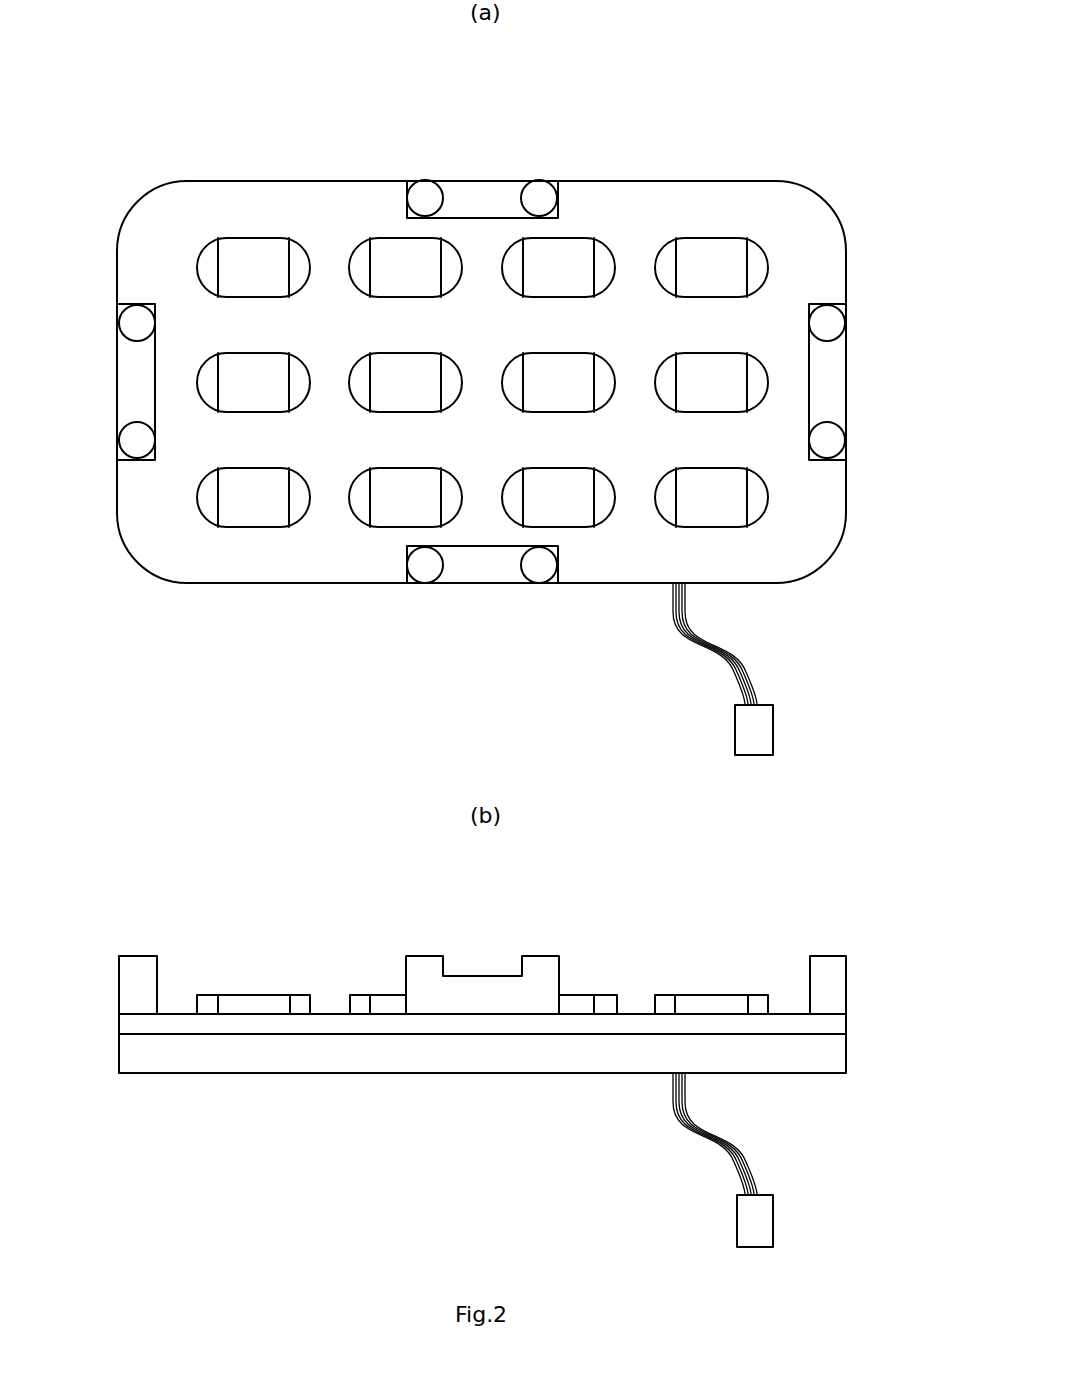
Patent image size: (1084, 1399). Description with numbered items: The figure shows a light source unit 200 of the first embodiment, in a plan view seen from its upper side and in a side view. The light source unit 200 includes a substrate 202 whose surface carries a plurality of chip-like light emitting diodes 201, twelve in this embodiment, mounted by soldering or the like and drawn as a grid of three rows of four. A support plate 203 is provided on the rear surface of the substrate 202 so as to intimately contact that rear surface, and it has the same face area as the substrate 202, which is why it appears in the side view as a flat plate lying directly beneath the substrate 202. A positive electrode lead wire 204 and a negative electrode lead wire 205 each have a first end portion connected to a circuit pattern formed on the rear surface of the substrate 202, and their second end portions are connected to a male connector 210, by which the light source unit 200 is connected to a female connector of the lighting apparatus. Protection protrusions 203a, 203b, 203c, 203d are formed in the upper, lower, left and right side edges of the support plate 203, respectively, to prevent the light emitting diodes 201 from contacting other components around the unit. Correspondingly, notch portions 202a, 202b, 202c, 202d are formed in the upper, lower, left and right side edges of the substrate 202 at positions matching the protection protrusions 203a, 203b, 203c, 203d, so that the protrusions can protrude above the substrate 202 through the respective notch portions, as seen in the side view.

The light source unit 200 is at (787, 83).
The chip-like light emitting diodes 201 is at (762, 222).
The substrate 202 is at (640, 193).
The notch portion 202a is at (425, 192).
The notch portion 202b is at (425, 575).
The notch portion 202c is at (125, 322).
The notch portion 202d is at (838, 322).
The support plate 203 is at (341, 1062).
The protection protrusion 203a is at (485, 192).
The protection protrusion 203b is at (485, 575).
The protection protrusion 203c is at (125, 388).
The protection protrusion 203d is at (838, 388).
The positive electrode lead wire 204 is at (726, 889).
The negative electrode lead wire 205 is at (740, 658).
The male connector 210 is at (768, 727).